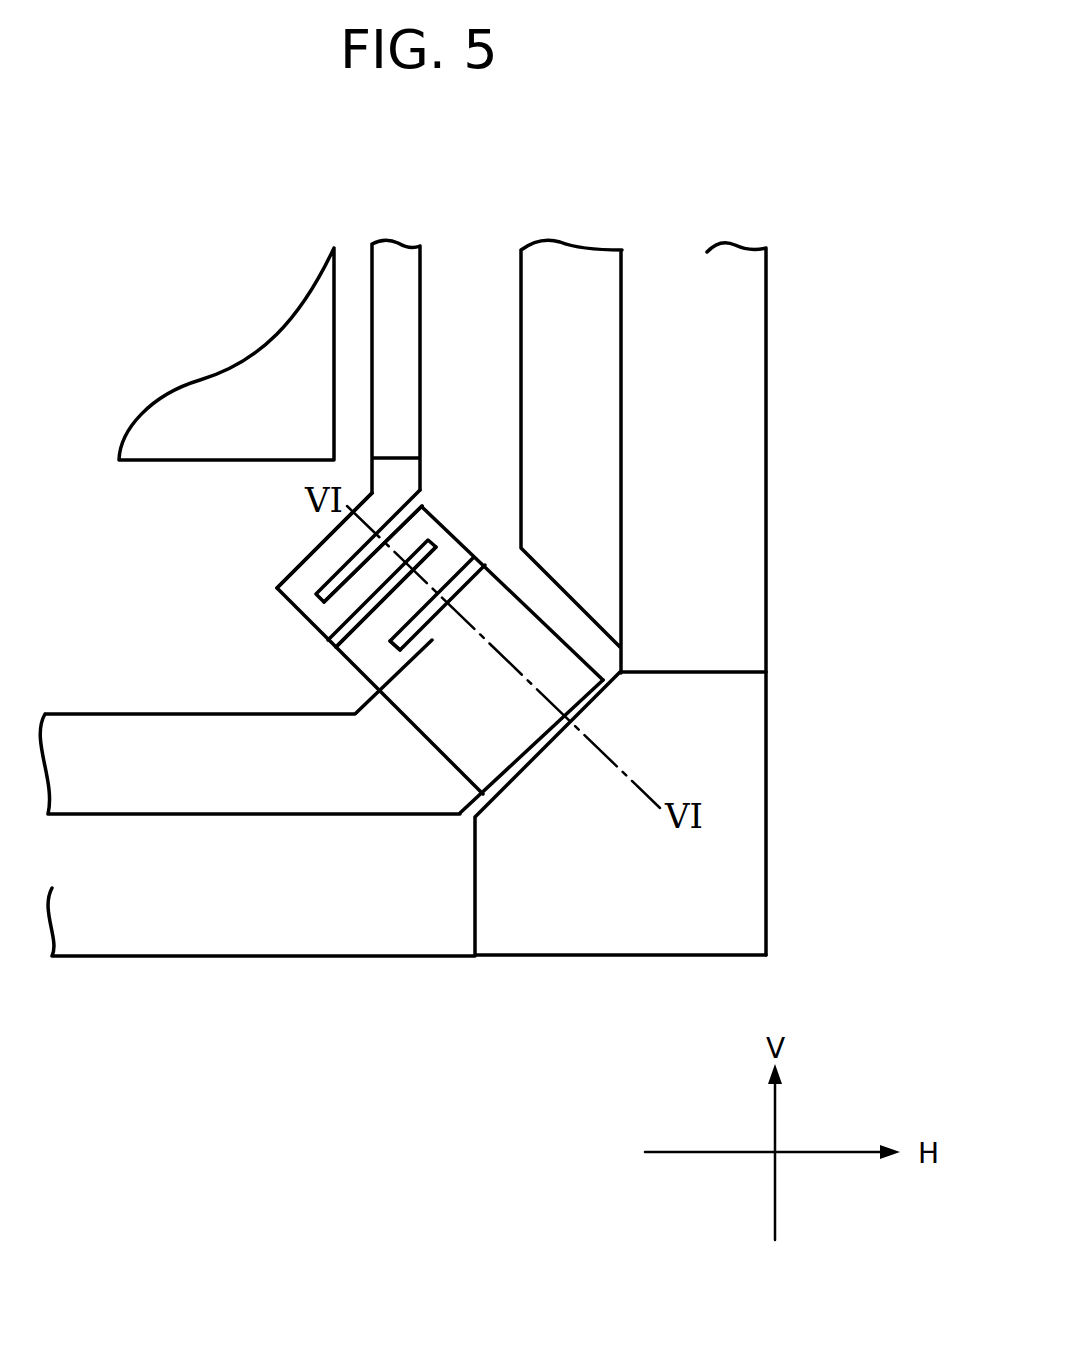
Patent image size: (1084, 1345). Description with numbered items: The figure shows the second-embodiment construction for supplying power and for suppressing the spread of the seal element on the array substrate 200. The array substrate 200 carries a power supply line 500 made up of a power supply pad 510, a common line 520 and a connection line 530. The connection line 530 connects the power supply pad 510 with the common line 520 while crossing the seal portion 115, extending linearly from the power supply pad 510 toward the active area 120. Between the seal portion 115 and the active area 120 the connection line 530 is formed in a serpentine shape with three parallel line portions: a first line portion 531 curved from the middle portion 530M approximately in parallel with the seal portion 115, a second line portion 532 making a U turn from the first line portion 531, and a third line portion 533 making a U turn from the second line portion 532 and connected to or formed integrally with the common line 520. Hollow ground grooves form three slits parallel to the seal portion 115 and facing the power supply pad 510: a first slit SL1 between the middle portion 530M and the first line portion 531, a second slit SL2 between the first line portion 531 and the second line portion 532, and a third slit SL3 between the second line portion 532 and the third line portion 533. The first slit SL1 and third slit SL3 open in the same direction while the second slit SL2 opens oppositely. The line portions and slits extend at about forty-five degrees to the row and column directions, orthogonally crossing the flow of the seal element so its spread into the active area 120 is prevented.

The seal portion 115 is at (580, 255).
The active area 120 is at (220, 378).
The array substrate 200 is at (768, 372).
The power supply line 500 is at (441, 756).
The power supply pad 510 is at (752, 742).
The common line 520 is at (398, 243).
The connection line 530 is at (580, 650).
The middle portion 530M is at (392, 653).
The first line portion 531 is at (392, 623).
The second line portion 532 is at (392, 578).
The third line portion 533 is at (356, 560).
The first slit SL1 is at (484, 563).
The second slit SL2 is at (424, 550).
The third slit SL3 is at (423, 507).